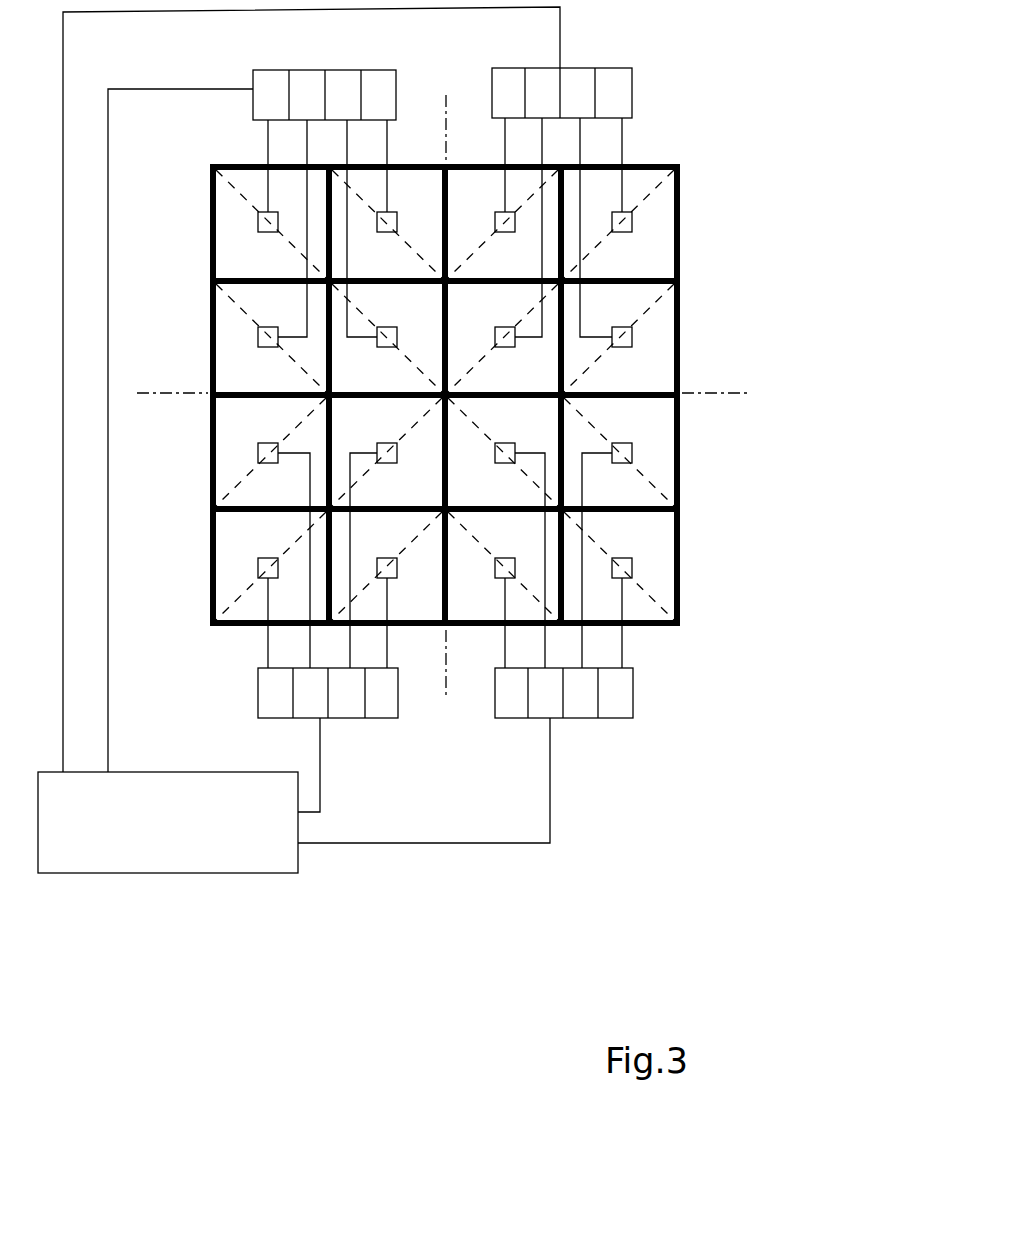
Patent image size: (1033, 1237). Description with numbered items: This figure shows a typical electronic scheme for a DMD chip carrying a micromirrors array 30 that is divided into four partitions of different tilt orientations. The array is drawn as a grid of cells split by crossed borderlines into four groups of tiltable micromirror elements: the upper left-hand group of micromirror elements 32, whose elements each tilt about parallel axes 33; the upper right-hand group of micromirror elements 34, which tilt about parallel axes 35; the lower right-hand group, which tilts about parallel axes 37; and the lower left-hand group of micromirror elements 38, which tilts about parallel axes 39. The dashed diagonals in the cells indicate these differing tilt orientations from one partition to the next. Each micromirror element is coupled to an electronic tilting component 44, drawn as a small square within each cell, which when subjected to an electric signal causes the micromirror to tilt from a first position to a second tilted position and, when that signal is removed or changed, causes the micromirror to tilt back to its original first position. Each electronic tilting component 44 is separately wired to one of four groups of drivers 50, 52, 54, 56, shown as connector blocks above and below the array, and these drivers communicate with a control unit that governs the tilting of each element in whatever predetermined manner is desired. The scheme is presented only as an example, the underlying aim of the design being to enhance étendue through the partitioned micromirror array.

The micromirrors array 30 is at (491, 393).
The upper left-hand group of micromirror elements 32 is at (233, 325).
The parallel axes 33 is at (241, 199).
The upper right-hand group of micromirror elements 34 is at (665, 228).
The parallel axes 35 is at (652, 305).
The parallel axes 37 is at (678, 608).
The lower left-hand group of micromirror elements 38 is at (228, 570).
The parallel axes 39 is at (238, 595).
The electronic tilting component 44 is at (262, 445).
The driver 50 is at (619, 718).
The driver 52 is at (382, 718).
The driver 54 is at (375, 68).
The driver 56 is at (613, 67).